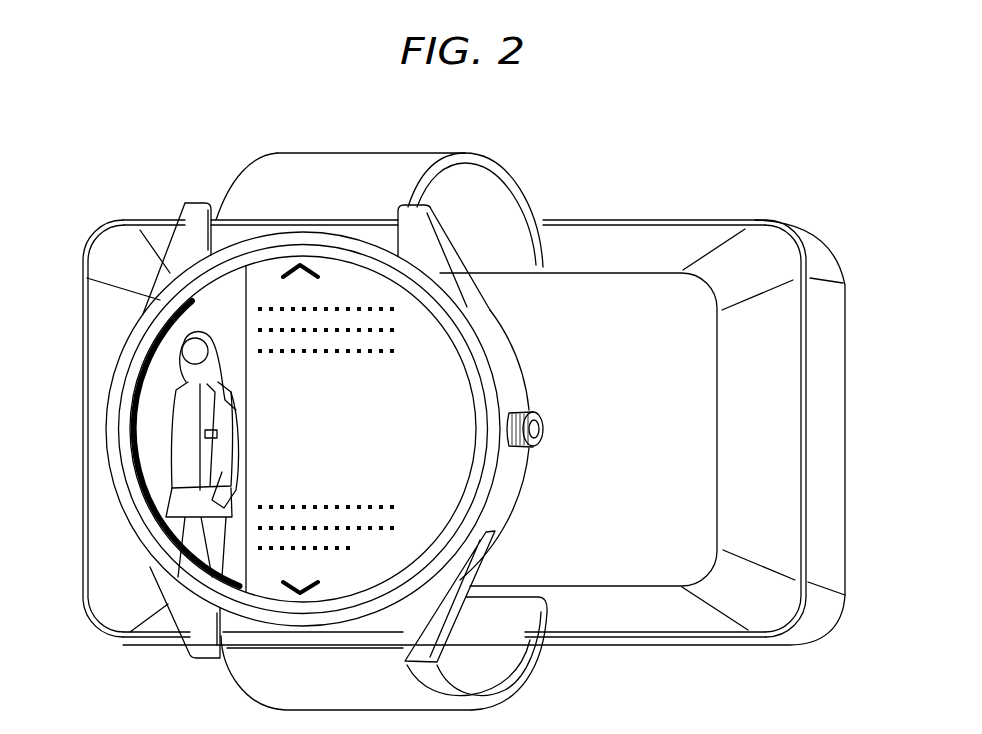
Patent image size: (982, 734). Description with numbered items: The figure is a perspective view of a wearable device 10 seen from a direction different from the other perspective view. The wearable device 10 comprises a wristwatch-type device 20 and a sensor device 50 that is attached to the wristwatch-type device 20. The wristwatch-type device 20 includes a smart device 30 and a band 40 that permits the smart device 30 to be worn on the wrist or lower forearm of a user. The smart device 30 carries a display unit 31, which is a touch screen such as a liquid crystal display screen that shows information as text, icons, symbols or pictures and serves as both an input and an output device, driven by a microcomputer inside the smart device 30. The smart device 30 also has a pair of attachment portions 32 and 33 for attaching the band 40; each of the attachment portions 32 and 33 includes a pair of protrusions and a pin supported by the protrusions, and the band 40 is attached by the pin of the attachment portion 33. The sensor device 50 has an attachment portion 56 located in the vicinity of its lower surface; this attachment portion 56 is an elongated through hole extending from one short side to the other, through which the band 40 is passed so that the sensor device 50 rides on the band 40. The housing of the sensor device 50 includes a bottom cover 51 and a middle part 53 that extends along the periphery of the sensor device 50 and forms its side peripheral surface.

The wearable device 10 is at (777, 135).
The wristwatch-type device 20 is at (97, 117).
The smart device 30 is at (125, 233).
The display unit 31 is at (148, 413).
The attachment portion 32 is at (422, 247).
The attachment portion 33 is at (203, 642).
The band 40 is at (255, 180).
The sensor device 50 is at (612, 218).
The bottom cover 51 is at (662, 243).
The middle part 53 is at (846, 425).
The attachment portion 56 is at (510, 597).